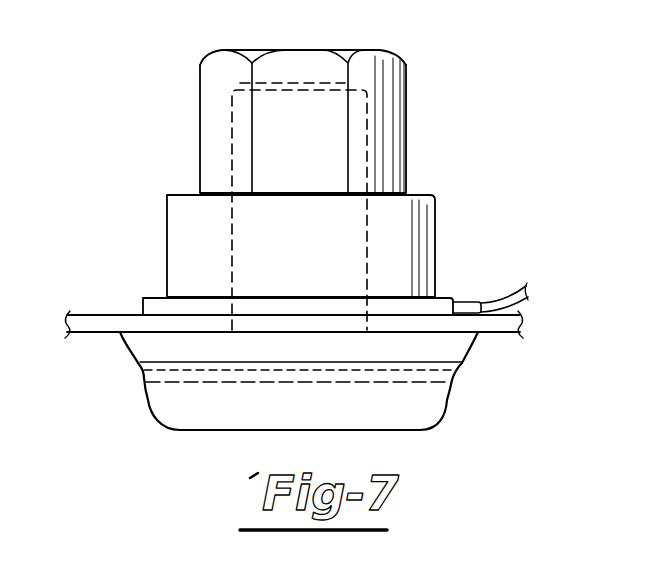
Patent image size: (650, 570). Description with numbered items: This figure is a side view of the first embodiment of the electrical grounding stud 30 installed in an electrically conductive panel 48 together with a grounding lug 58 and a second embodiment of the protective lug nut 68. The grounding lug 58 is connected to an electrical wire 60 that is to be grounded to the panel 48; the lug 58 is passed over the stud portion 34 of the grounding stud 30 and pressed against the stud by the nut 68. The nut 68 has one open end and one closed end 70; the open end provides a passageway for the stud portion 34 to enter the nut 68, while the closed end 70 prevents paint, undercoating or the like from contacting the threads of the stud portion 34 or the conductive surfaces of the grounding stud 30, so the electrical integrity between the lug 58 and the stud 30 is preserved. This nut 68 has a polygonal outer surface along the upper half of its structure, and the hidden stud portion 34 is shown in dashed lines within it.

The body of sensor housing 30 is at (168, 205).
The stud (hidden) 34 is at (228, 128).
The panel with cup 48 is at (87, 326).
The terminal plate 58 is at (432, 310).
The lead wire connector 60 is at (507, 297).
The cap nut 68 is at (415, 139).
The closed top of cap nut 70 is at (311, 47).